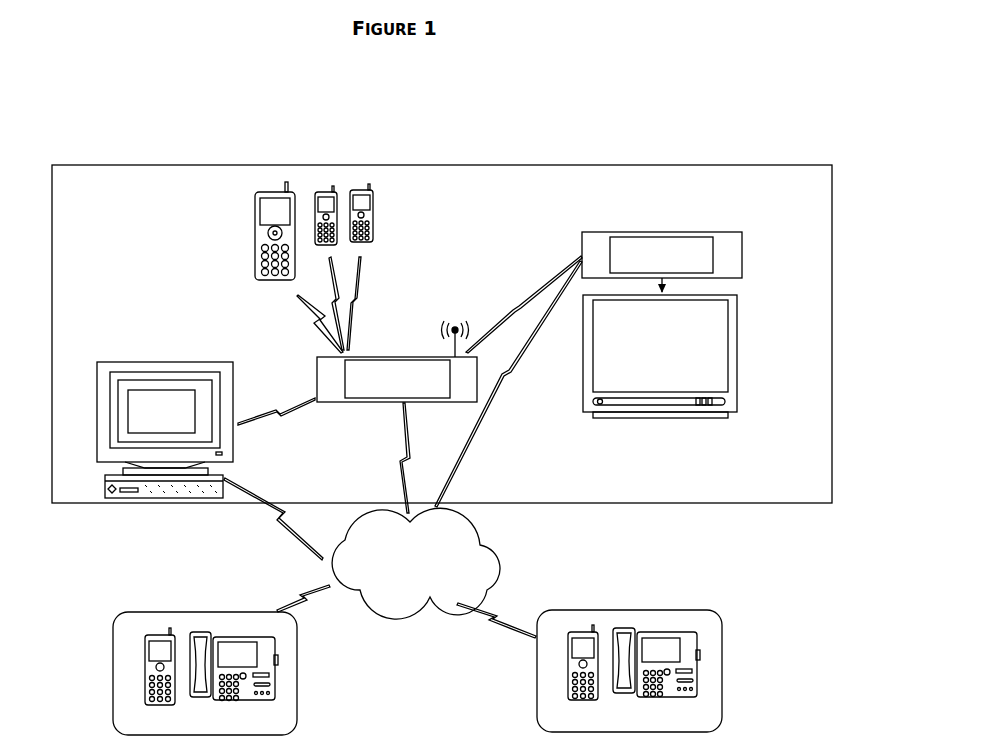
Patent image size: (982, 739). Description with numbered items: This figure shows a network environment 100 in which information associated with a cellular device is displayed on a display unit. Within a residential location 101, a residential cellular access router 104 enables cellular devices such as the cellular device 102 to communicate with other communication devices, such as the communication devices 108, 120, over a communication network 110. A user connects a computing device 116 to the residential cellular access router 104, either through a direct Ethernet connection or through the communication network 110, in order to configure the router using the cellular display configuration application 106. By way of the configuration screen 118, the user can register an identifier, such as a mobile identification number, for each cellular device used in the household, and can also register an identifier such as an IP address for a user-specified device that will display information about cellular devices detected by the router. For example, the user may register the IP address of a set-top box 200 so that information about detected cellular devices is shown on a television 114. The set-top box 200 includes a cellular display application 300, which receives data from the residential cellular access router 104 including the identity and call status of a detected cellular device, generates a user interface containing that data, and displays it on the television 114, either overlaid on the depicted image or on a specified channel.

The network environment 100 is at (93, 76).
The residential location 101 is at (666, 164).
The cellular device 102 is at (252, 227).
The residential cellular access router 104 is at (389, 355).
The cellular display configuration application 106 is at (414, 357).
The communication device 108 is at (141, 611).
The communication network 110 is at (416, 563).
The television 114 is at (731, 352).
The computing device 116 is at (95, 376).
The configuration screen 118 is at (200, 408).
The communication device 120 is at (598, 609).
The set-top box 200 is at (594, 231).
The cellular display application 300 is at (716, 250).